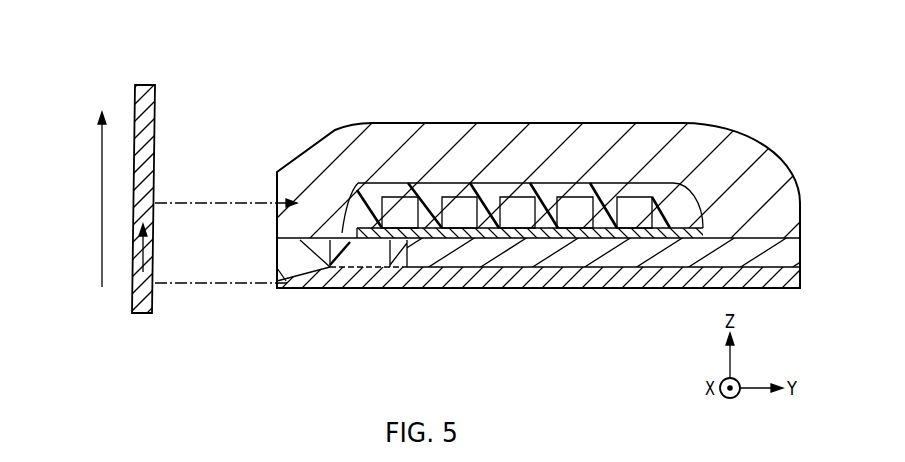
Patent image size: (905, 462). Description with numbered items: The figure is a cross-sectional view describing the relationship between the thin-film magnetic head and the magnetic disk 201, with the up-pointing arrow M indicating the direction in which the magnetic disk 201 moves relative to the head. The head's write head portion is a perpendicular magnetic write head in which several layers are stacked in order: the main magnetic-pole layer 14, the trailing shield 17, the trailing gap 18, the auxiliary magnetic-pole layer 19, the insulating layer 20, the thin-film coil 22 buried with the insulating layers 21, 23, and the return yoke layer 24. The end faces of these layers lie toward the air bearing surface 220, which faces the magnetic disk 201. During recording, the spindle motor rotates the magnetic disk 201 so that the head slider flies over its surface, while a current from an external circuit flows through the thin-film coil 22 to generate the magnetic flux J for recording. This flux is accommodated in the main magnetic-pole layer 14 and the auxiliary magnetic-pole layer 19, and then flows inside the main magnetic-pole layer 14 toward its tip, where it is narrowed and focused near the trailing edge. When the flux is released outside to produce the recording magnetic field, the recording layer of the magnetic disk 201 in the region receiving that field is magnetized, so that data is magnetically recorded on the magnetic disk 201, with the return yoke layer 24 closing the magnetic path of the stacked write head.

The main magnetic-pole layer 14 is at (567, 277).
The trailing shield 17 is at (302, 250).
The trailing gap 18 is at (393, 240).
The auxiliary magnetic-pole layer 19 is at (453, 250).
The insulating layer 20 is at (352, 257).
The insulating layer 21 is at (640, 225).
The thin-film coil 22 is at (515, 205).
The insulating layer 23 is at (487, 195).
The return yoke layer 24 is at (705, 140).
The magnetic disk 201 is at (142, 313).
The air bearing surface 220 is at (277, 247).